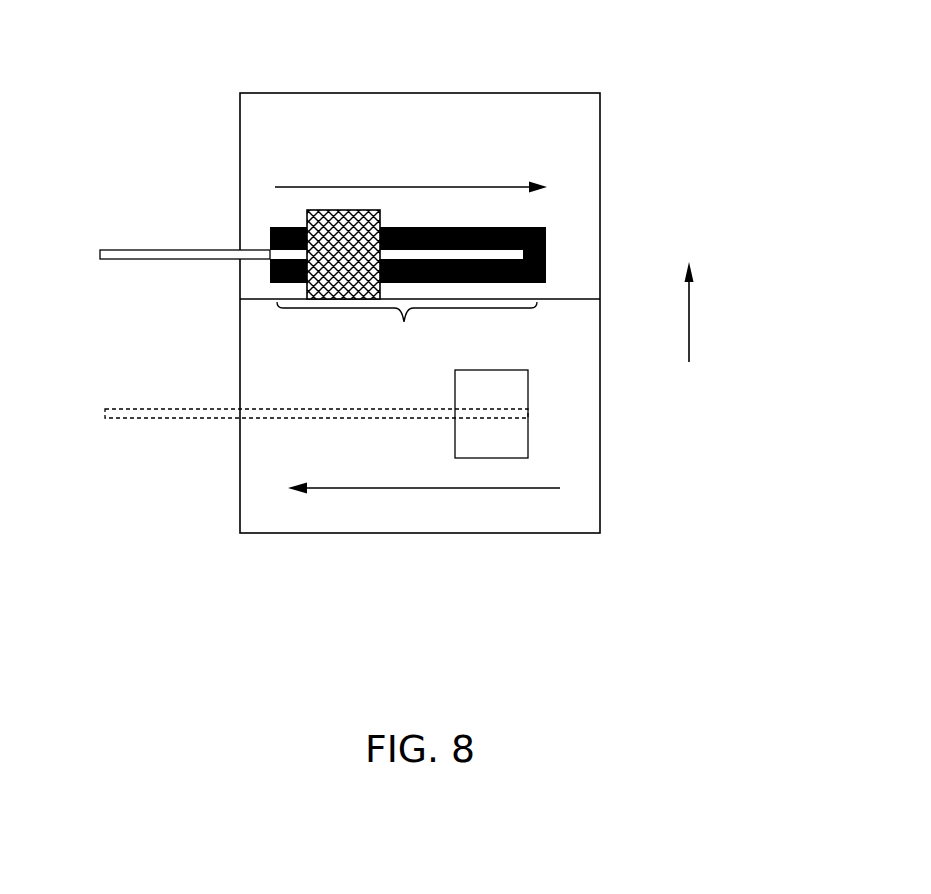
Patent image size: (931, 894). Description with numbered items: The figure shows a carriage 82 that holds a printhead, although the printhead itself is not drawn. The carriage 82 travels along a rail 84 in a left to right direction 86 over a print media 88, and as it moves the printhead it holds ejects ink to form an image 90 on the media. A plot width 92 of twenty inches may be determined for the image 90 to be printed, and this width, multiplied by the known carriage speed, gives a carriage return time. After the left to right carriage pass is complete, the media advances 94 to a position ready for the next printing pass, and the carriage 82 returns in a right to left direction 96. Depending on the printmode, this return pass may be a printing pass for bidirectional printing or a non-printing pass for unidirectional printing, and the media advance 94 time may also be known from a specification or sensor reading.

The carriage 82 is at (333, 227).
The rail 84 is at (142, 249).
The left to right direction 86 is at (480, 187).
The print media 88 is at (567, 192).
The image 90 is at (270, 273).
The plot width 92 is at (404, 322).
The media advance 94 is at (689, 290).
The right to left direction 96 is at (528, 488).